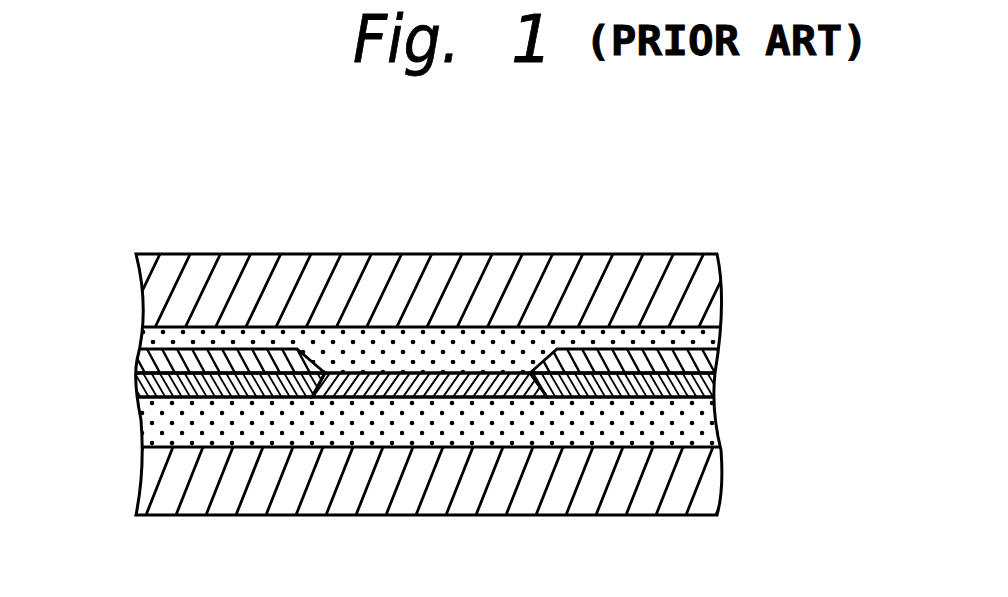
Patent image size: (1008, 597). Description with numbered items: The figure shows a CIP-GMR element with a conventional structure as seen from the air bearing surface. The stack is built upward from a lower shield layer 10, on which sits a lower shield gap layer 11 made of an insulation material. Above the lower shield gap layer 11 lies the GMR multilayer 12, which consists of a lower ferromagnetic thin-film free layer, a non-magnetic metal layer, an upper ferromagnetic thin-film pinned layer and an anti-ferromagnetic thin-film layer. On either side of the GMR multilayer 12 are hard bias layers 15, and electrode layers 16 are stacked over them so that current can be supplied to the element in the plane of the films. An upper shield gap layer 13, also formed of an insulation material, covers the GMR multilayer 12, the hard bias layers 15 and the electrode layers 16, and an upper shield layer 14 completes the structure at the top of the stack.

The lower shield layer 10 is at (705, 485).
The lower shield gap layer 11 is at (703, 430).
The GMR multilayer 12 is at (486, 397).
The upper shield gap layer 13 is at (695, 343).
The upper shield layer 14 is at (698, 281).
The hard bias layers 15 is at (134, 386).
The electrode layers 16 is at (134, 366).